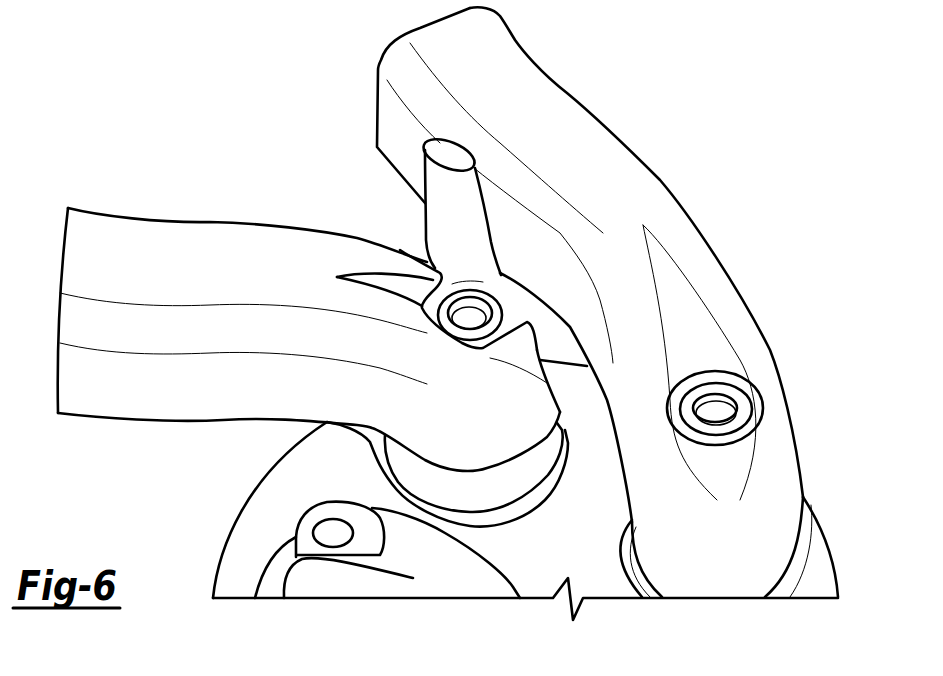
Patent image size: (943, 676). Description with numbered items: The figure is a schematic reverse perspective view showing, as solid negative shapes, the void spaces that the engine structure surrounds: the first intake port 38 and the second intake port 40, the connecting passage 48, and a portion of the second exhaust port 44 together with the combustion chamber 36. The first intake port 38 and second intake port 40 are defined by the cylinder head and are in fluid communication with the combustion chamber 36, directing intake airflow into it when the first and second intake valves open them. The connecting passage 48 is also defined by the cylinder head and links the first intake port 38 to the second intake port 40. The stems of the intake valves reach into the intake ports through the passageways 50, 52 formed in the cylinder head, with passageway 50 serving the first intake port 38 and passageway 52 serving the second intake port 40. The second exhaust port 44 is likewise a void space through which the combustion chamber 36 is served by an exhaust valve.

The combustion chamber 36 is at (258, 485).
The first intake port 38 is at (507, 67).
The second intake port 40 is at (165, 237).
The second exhaust port 44 is at (352, 585).
The connecting passage 48 is at (438, 240).
The passageway 50 is at (713, 402).
The passageway 52 is at (470, 303).